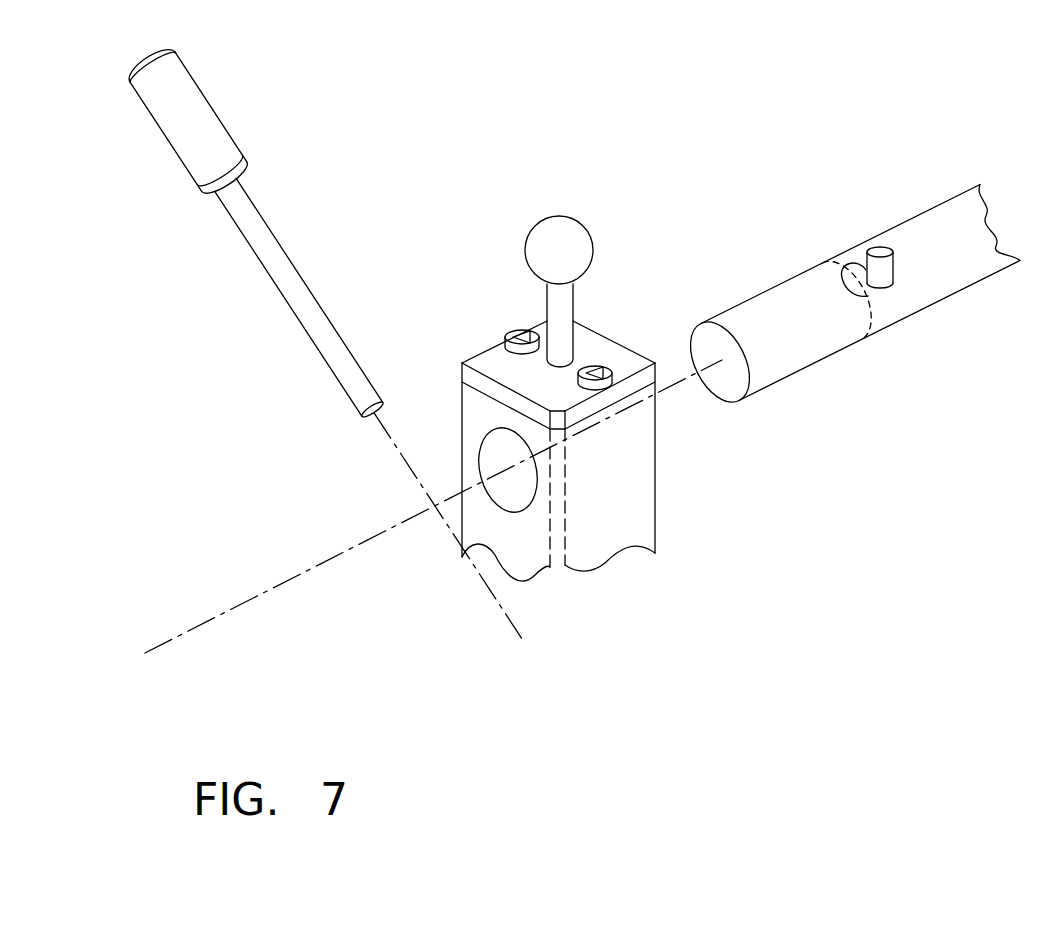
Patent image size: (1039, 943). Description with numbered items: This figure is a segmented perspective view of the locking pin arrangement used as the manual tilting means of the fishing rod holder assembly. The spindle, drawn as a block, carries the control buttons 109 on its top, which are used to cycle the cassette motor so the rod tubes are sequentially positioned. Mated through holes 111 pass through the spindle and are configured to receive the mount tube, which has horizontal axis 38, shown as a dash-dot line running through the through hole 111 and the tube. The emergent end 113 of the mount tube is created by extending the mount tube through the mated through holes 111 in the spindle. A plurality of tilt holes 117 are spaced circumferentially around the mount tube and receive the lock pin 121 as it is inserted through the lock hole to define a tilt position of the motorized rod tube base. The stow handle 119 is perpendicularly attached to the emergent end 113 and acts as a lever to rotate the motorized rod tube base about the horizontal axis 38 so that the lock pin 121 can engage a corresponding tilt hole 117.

The horizontal axis 38 is at (342, 552).
The control buttons 109 is at (592, 364).
The mated through holes 111 is at (541, 483).
The emergent end 113 is at (766, 371).
The tilt holes 117 is at (868, 244).
The stow handle 119 is at (197, 117).
The lock pin 121 is at (558, 232).